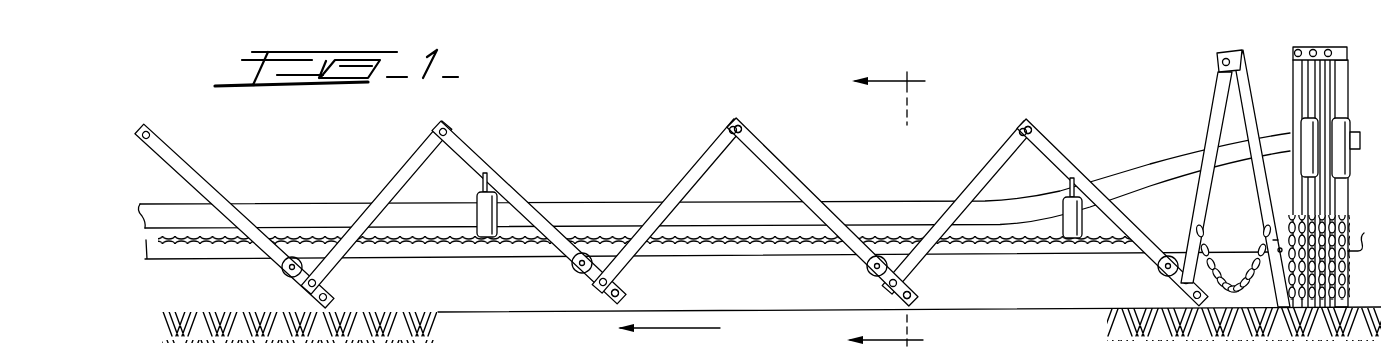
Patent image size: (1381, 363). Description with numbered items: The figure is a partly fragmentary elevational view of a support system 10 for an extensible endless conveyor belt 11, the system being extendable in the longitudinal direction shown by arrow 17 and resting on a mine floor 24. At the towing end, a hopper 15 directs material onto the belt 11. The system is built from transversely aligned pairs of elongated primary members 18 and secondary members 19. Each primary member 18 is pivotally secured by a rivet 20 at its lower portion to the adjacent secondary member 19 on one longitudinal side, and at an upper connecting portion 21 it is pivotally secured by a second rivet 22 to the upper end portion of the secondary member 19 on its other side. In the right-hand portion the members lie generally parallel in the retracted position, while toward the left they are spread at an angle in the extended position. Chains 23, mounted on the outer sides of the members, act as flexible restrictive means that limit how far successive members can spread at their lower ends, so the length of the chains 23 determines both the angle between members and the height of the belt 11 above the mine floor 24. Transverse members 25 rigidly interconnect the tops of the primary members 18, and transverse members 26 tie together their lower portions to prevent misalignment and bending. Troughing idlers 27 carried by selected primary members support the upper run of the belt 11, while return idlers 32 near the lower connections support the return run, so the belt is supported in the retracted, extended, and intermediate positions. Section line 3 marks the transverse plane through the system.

The section line 3- 3 is at (886, 211).
The support system 10 is at (503, 156).
The endless conveyor belt 11 is at (300, 203).
The hopper 15 is at (1335, 50).
The arrow 17 is at (660, 330).
The primary member 18 is at (790, 163).
The secondary member 19 is at (683, 182).
The rivet 20 is at (883, 282).
The upper connecting portion 21 is at (744, 121).
The second rivet 22 is at (728, 132).
The chain 23 is at (695, 244).
The mine floor 24 is at (453, 312).
The transverse member 25 is at (1030, 120).
The transverse member 26 is at (620, 292).
The troughing idler 27 is at (475, 207).
The return idler 32 is at (285, 274).